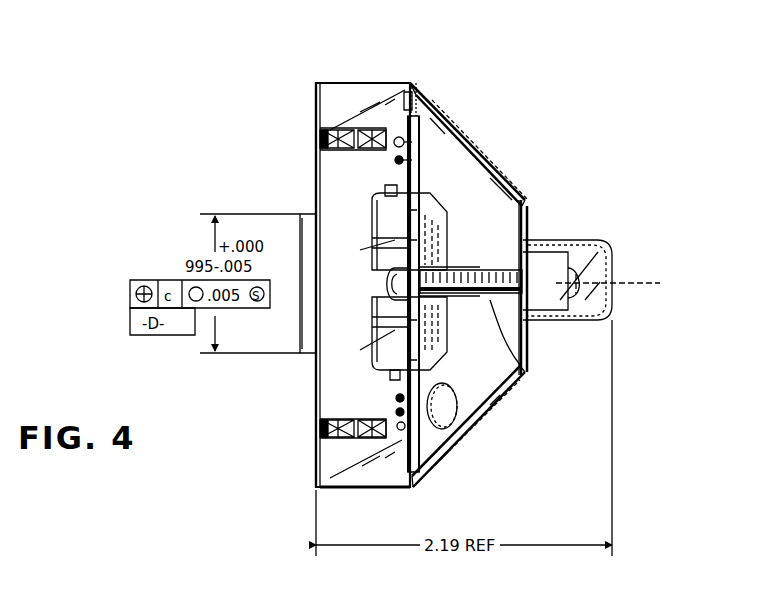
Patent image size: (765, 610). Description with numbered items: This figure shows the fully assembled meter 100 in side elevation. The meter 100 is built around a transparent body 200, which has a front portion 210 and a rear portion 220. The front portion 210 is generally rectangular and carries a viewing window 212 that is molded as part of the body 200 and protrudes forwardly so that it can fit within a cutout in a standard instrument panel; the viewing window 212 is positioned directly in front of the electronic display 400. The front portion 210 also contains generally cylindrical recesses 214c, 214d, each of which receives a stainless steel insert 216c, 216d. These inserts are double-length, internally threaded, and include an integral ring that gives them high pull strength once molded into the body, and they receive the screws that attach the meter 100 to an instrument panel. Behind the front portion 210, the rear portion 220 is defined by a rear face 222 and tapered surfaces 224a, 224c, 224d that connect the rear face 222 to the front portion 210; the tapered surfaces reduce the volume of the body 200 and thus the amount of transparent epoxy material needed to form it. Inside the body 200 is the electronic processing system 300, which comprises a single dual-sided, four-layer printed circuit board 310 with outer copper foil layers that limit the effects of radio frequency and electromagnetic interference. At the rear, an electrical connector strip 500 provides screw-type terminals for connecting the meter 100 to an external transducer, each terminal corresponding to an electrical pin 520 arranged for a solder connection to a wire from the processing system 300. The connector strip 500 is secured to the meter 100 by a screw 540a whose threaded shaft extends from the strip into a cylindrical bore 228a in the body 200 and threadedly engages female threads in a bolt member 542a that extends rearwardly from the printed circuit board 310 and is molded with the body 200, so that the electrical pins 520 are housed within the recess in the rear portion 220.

The meter 100 is at (620, 104).
The transparent body 200 is at (313, 83).
The front portion 210 is at (346, 82).
The viewing window 212 is at (305, 357).
The cylindrical recess 214c is at (320, 427).
The cylindrical recess 214d is at (318, 128).
The stainless steel insert 216c is at (322, 446).
The stainless steel insert 216d is at (321, 152).
The rear portion 220 is at (463, 118).
The rear face 222 is at (528, 222).
The tapered surface 224a is at (492, 170).
The tapered surface 224c is at (503, 385).
The tapered surface 224d is at (478, 420).
The cylindrical bore 228a is at (505, 376).
The electronic processing system 300 is at (462, 232).
The printed circuit board 310 is at (412, 93).
The electronic display 400 is at (357, 208).
The electrical connector strip 500 is at (613, 246).
The electrical pin 520 is at (526, 340).
The screw 540a is at (580, 276).
The bolt member 542a is at (395, 276).